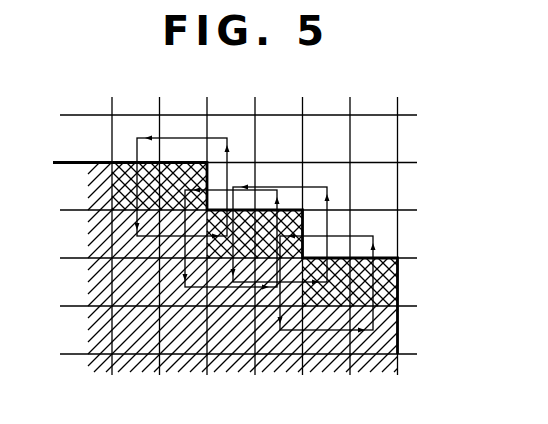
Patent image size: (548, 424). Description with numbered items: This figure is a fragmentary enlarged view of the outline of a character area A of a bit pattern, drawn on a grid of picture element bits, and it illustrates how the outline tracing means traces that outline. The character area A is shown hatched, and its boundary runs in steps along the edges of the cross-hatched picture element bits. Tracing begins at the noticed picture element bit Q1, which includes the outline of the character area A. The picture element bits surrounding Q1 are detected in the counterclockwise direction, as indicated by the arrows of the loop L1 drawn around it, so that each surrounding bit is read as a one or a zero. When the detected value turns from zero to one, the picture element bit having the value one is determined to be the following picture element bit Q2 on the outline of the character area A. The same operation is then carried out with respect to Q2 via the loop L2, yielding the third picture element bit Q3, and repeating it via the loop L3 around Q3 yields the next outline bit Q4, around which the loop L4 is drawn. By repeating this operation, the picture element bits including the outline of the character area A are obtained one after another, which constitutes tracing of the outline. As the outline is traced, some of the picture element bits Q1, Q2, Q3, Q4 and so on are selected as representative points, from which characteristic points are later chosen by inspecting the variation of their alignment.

The character area A is at (130, 290).
The picture element bit Q4 is at (187, 168).
The third picture element bit Q3 is at (233, 213).
The following picture element bit Q2 is at (288, 210).
The noticed picture element bit Q1 is at (343, 290).
The loop L4 is at (168, 138).
The loop L3 is at (218, 190).
The loop L2 is at (327, 225).
The loop L1 is at (377, 252).